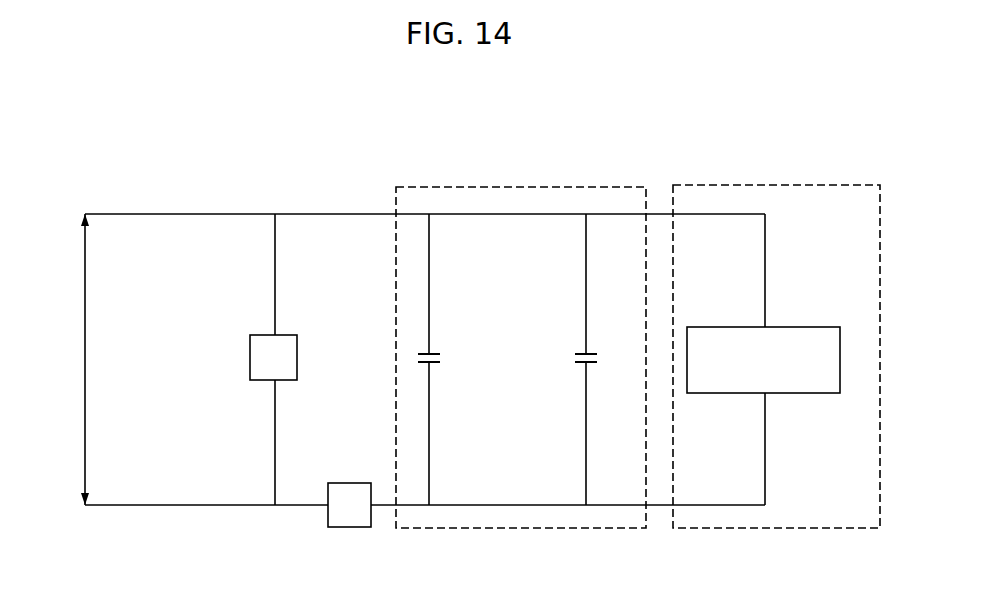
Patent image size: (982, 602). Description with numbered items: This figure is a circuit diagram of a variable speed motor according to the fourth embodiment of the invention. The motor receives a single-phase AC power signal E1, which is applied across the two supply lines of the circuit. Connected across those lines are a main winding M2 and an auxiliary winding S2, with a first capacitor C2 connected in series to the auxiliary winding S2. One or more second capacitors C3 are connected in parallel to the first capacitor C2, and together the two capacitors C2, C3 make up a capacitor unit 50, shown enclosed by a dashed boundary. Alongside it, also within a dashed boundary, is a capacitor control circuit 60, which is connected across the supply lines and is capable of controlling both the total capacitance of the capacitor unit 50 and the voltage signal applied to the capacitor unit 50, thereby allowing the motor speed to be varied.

The capacitor unit 50 is at (542, 187).
The capacitor control circuit 60 is at (747, 185).
The single-phase AC power signal E1 is at (70, 359).
The main winding M2 is at (273, 359).
The auxiliary winding S2 is at (349, 505).
The first capacitor C2 is at (446, 359).
The second capacitor C3 is at (603, 359).